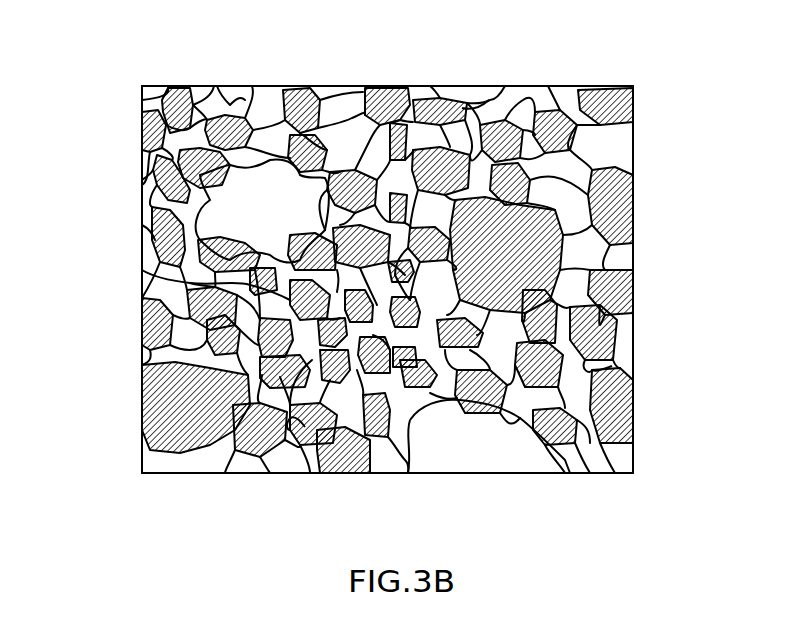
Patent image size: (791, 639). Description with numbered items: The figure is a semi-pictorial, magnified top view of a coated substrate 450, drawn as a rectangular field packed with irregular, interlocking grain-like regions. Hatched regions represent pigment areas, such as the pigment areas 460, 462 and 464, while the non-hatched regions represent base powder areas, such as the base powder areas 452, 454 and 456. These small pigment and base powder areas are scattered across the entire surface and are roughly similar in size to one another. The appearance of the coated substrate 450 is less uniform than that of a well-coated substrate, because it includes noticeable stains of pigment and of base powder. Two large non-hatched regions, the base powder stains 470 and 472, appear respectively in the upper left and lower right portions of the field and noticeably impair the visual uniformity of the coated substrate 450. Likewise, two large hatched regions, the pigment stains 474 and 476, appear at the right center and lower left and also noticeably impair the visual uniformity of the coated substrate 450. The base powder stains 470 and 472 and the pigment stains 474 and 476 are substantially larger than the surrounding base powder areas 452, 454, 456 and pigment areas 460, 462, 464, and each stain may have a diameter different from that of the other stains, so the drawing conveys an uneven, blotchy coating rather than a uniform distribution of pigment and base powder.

The coated substrate 450 is at (636, 66).
The base powder area 452 is at (489, 100).
The base powder area 454 is at (612, 366).
The base powder area 456 is at (190, 283).
The pigment area 460 is at (302, 432).
The pigment area 462 is at (209, 104).
The pigment area 464 is at (535, 173).
The base powder stain 470 is at (288, 219).
The base powder stain 472 is at (505, 454).
The pigment stain 474 is at (573, 240).
The pigment stain 476 is at (158, 374).